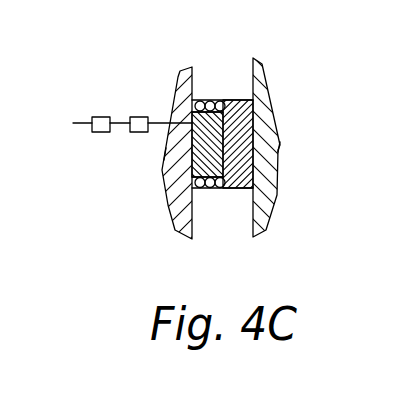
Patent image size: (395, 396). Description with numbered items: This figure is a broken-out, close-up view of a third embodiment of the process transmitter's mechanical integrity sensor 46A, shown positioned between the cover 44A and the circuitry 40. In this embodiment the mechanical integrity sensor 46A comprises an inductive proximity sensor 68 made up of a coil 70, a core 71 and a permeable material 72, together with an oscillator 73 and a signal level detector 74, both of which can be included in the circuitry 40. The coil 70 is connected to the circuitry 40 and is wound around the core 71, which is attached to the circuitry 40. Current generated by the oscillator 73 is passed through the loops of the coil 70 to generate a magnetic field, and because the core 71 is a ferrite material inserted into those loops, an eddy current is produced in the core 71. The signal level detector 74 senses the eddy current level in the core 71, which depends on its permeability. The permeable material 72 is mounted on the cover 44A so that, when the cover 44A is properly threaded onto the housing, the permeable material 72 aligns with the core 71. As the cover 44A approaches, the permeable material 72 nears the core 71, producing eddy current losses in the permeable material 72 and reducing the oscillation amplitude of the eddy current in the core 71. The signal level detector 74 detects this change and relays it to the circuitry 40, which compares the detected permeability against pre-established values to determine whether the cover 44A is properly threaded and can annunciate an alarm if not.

The circuitry 40 is at (185, 72).
The cover 44A is at (266, 92).
The mechanical integrity sensor 46A is at (214, 214).
The inductive proximity sensor 68 is at (170, 172).
The coil 70 is at (210, 100).
The core 71 is at (166, 152).
The permeable material 72 is at (268, 148).
The oscillator 73 is at (103, 117).
The signal level detector 74 is at (140, 117).